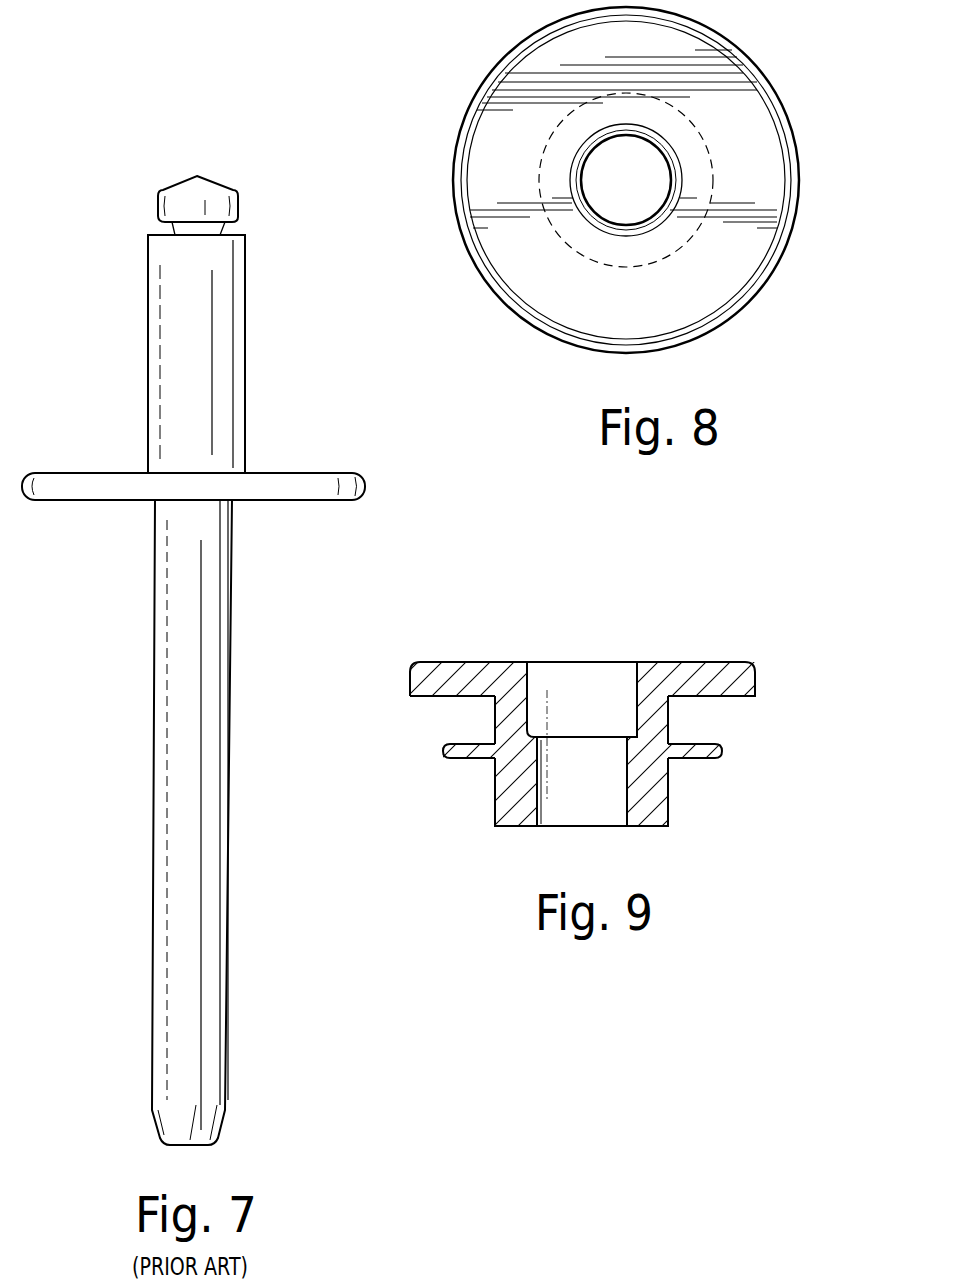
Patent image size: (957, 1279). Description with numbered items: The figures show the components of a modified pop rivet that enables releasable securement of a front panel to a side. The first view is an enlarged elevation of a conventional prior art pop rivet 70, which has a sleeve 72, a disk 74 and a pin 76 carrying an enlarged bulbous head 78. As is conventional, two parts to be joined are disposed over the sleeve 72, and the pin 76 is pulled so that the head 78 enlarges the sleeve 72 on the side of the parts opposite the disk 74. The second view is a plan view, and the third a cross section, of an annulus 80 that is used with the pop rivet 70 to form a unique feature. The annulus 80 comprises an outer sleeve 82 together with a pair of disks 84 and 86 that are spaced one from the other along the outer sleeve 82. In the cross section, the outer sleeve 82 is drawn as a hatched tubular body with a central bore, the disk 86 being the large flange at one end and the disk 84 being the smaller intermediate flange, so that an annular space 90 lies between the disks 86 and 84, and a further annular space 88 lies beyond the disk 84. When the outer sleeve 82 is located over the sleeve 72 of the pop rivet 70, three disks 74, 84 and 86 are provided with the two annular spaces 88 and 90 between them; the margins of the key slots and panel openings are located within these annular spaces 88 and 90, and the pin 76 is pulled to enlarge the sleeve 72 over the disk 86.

In FIG. 7, the pop rivet 70 is at (238, 528).
In FIG. 7, the sleeve 72 is at (152, 342).
In FIG. 7, the disk 74 is at (327, 473).
In FIG. 7, the pin 76 is at (230, 638).
In FIG. 7, the enlarged bulbous head 78 is at (155, 203).
In FIG. 8, the annulus 80 is at (475, 268).
In FIG. 9, the annulus 80 is at (510, 682).
In FIG. 9, the outer sleeve 82 is at (668, 817).
In FIG. 9, the disk 84 is at (722, 750).
In FIG. 8, the disk 86 is at (700, 287).
In FIG. 9, the disk 86 is at (755, 687).
In FIG. 9, the annular space 88 is at (690, 775).
In FIG. 9, the annular space 90 is at (690, 704).